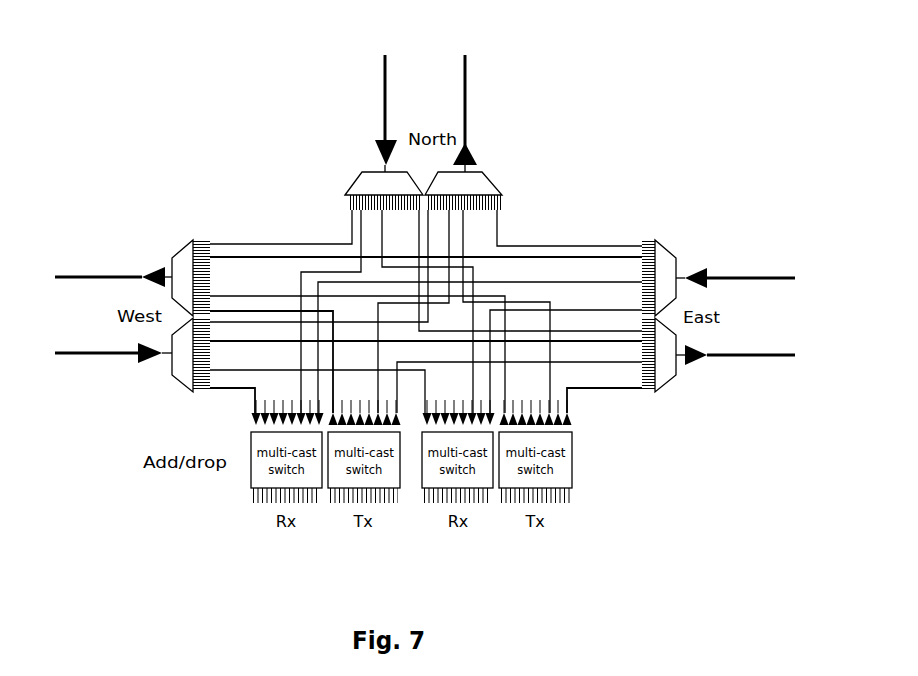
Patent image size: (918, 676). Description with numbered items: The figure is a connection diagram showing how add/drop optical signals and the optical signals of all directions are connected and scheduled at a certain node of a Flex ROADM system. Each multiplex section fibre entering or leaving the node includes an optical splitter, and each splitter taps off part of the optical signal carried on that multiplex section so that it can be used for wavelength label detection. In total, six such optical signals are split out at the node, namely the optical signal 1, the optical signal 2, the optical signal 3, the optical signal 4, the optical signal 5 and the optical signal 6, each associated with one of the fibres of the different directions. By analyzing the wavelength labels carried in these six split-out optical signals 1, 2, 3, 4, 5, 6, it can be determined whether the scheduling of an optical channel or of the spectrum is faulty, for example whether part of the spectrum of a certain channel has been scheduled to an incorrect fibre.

The optical signal 1 is at (712, 357).
The optical signal 2 is at (682, 263).
The optical signal 3 is at (85, 278).
The optical signal 4 is at (165, 358).
The optical signal 5 is at (463, 102).
The optical signal 6 is at (353, 163).